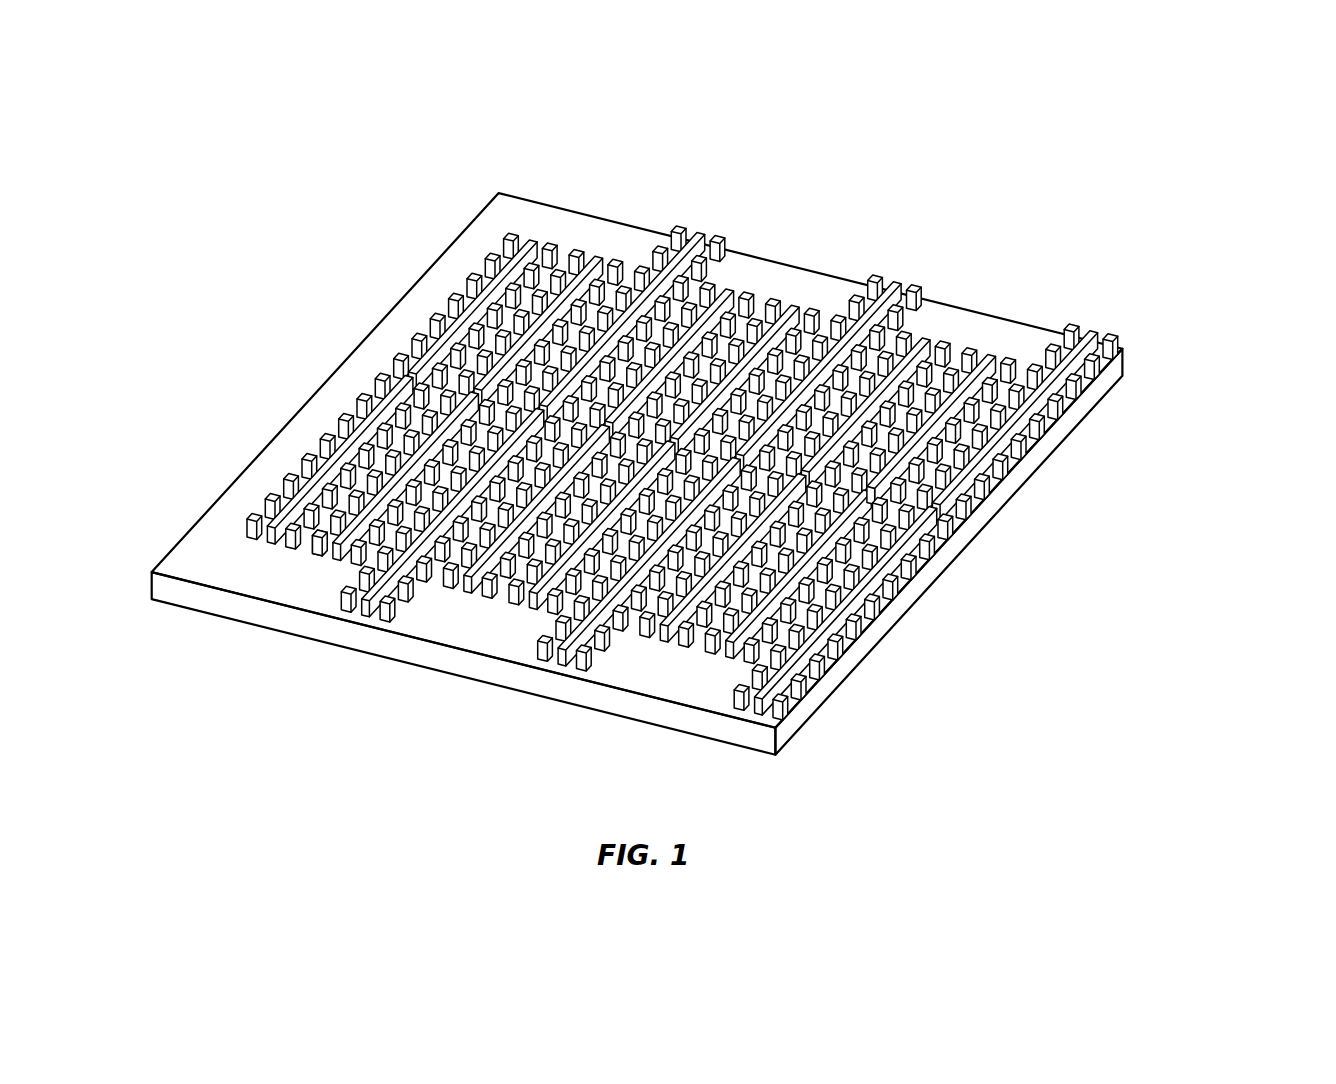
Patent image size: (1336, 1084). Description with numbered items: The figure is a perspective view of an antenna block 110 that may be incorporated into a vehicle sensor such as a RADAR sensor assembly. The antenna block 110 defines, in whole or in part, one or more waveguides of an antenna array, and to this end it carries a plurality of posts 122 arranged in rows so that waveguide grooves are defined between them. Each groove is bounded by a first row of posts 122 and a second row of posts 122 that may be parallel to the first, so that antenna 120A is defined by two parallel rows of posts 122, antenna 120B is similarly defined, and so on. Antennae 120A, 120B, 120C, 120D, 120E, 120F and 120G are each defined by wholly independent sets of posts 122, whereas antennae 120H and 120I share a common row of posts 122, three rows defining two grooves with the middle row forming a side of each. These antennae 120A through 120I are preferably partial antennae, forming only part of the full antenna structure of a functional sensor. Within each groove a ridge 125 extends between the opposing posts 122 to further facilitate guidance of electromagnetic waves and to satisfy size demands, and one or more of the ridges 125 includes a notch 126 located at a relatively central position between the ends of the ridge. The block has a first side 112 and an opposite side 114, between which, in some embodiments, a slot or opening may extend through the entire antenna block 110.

The antenna block 110 is at (700, 444).
The first side 112 is at (1058, 334).
The opposite side 114 is at (1057, 448).
The antenna 120A is at (603, 389).
The antenna 120B is at (566, 457).
The antenna 120C is at (707, 228).
The antenna 120D is at (739, 290).
The antenna 120E is at (804, 318).
The antenna 120F is at (909, 286).
The antenna 120G is at (936, 343).
The antenna 120H is at (892, 461).
The antenna 120I is at (1115, 325).
The post 122 is at (319, 553).
The ridge 125 is at (333, 457).
The notch 126 is at (898, 482).